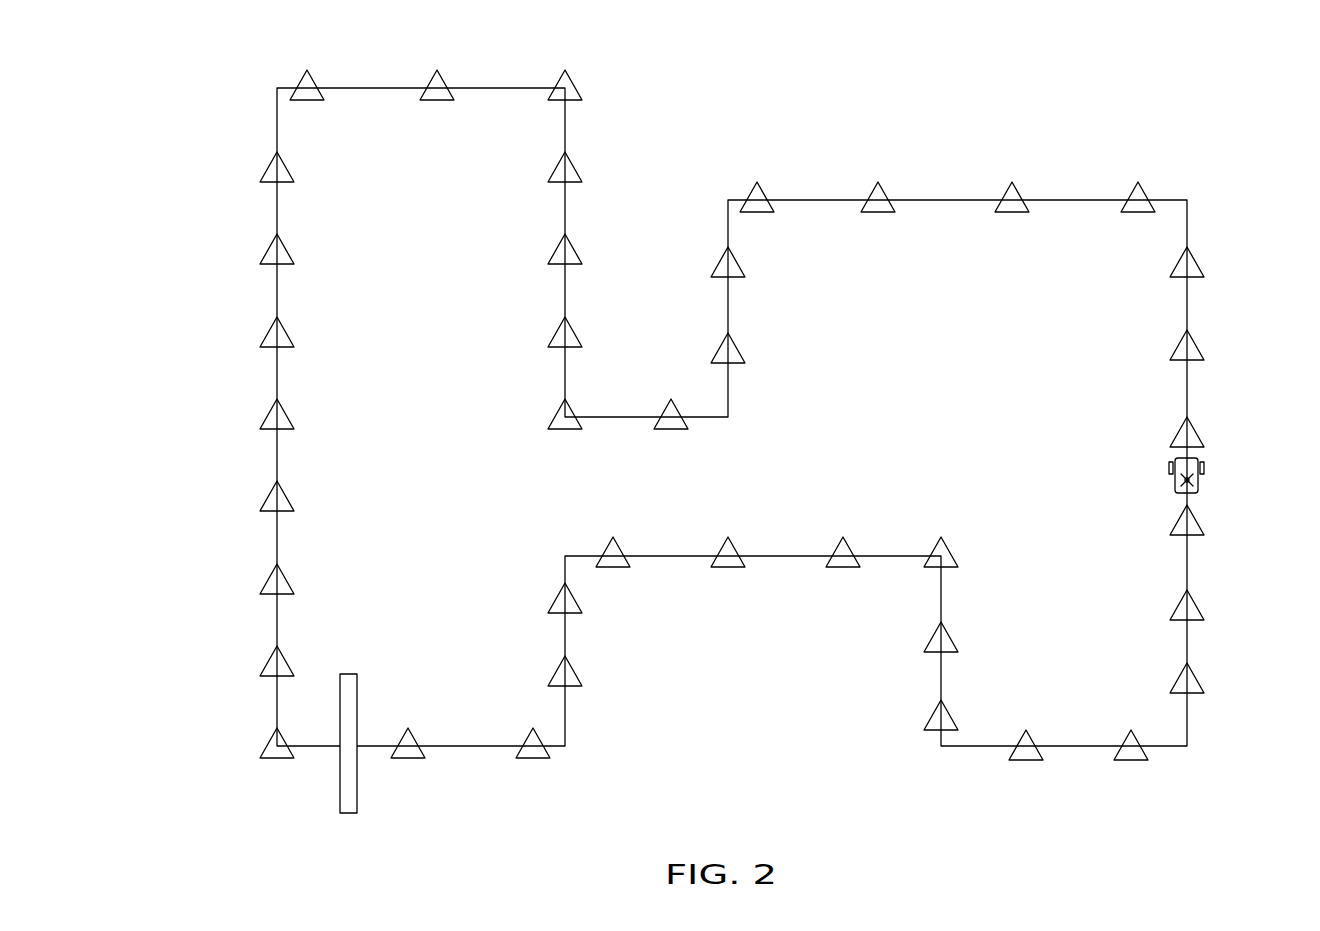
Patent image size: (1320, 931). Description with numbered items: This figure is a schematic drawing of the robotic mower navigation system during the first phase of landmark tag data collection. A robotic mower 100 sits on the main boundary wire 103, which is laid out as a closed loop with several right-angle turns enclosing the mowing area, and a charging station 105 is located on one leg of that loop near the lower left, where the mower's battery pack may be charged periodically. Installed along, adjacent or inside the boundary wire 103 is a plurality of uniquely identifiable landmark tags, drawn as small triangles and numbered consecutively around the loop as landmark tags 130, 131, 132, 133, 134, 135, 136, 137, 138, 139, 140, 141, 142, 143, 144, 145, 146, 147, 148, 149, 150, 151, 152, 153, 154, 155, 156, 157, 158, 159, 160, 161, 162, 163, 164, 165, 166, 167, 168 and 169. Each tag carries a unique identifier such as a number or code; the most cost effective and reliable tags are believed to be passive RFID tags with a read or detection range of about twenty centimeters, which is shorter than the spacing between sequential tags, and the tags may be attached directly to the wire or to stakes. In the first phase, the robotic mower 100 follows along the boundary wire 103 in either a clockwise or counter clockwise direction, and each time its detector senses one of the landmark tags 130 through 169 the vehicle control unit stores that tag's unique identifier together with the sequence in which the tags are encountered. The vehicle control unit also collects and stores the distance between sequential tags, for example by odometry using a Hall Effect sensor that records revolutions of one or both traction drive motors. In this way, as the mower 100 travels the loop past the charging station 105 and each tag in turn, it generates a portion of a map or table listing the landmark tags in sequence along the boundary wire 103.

The robotic mower 100 is at (1173, 482).
The boundary wire 103 is at (818, 200).
The charging station 105 is at (347, 693).
The landmark tag 130 is at (268, 742).
The landmark tag 131 is at (268, 660).
The landmark tag 132 is at (268, 578).
The landmark tag 133 is at (268, 495).
The landmark tag 134 is at (268, 413).
The landmark tag 135 is at (268, 331).
The landmark tag 136 is at (268, 248).
The landmark tag 137 is at (268, 166).
The landmark tag 138 is at (312, 83).
The landmark tag 139 is at (442, 83).
The landmark tag 140 is at (577, 85).
The landmark tag 141 is at (577, 167).
The landmark tag 142 is at (577, 249).
The landmark tag 143 is at (577, 332).
The landmark tag 144 is at (577, 410).
The landmark tag 145 is at (675, 429).
The landmark tag 146 is at (735, 355).
The landmark tag 147 is at (735, 268).
The landmark tag 148 is at (762, 185).
The landmark tag 149 is at (883, 185).
The landmark tag 150 is at (1017, 185).
The landmark tag 151 is at (1143, 185).
The landmark tag 152 is at (1197, 268).
The landmark tag 153 is at (1197, 351).
The landmark tag 154 is at (1197, 438).
The landmark tag 155 is at (1197, 526).
The landmark tag 156 is at (1197, 611).
The landmark tag 157 is at (1197, 684).
The landmark tag 158 is at (1131, 760).
The landmark tag 159 is at (1026, 760).
The landmark tag 160 is at (930, 718).
The landmark tag 161 is at (950, 648).
The landmark tag 162 is at (950, 563).
The landmark tag 163 is at (843, 567).
The landmark tag 164 is at (728, 567).
The landmark tag 165 is at (613, 567).
The landmark tag 166 is at (555, 598).
The landmark tag 167 is at (555, 671).
The landmark tag 168 is at (533, 760).
The landmark tag 169 is at (408, 760).